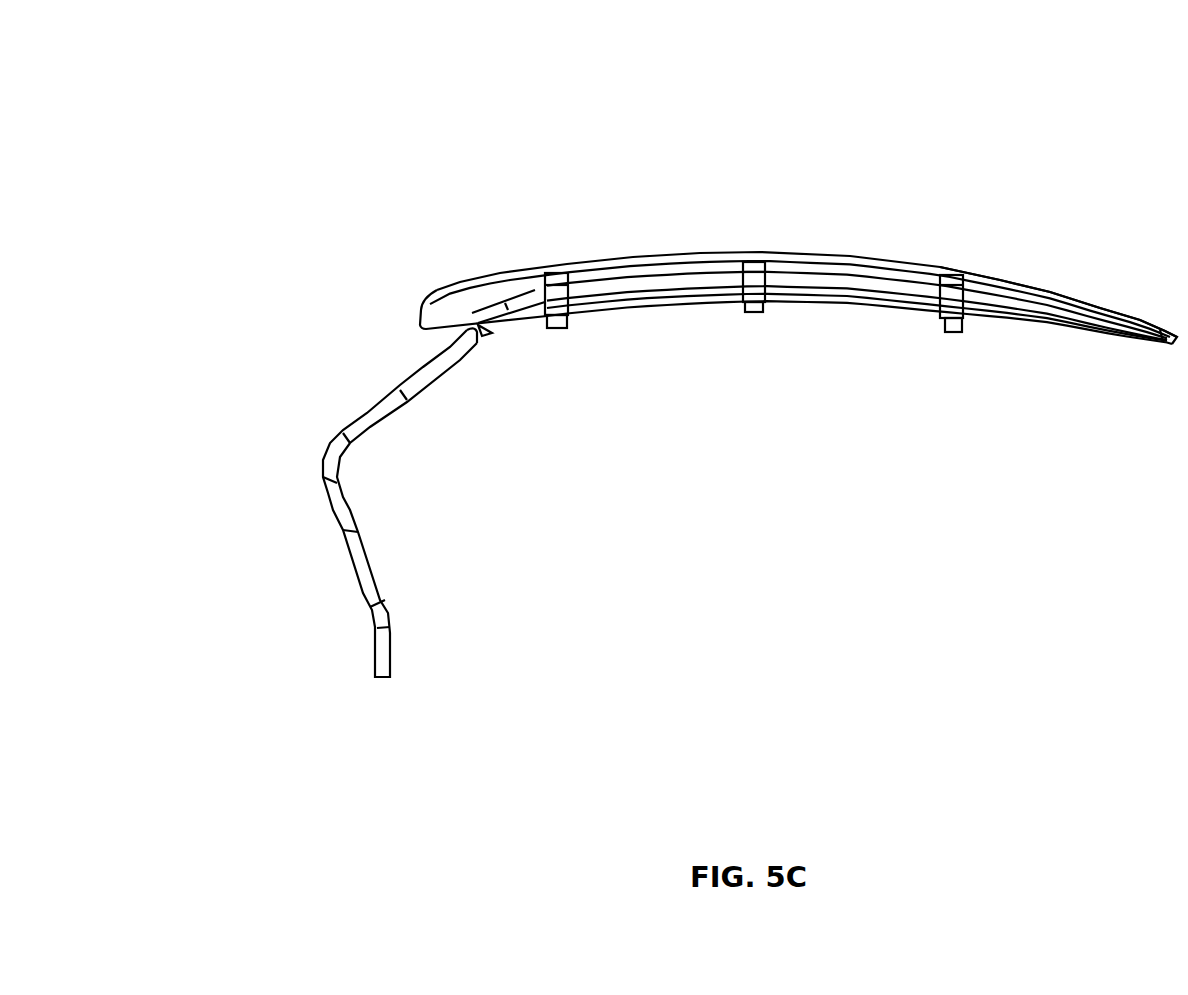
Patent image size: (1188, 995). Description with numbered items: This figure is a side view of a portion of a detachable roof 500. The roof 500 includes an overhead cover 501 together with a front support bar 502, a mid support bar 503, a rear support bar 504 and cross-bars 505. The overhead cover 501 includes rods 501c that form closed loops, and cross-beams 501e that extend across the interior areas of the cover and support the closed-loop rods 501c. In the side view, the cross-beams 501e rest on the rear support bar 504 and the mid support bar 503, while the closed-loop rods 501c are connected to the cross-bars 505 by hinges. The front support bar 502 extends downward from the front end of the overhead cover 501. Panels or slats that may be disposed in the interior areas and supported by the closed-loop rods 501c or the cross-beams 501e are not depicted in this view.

The roof 500 is at (288, 101).
The overhead cover 501 is at (731, 197).
The rods 501c is at (1027, 283).
The cross-beams 501e is at (757, 312).
The front support bar 502 is at (365, 418).
The mid support bar 503 is at (552, 328).
The rear support bar 504 is at (952, 338).
The cross-bars 505 is at (678, 274).